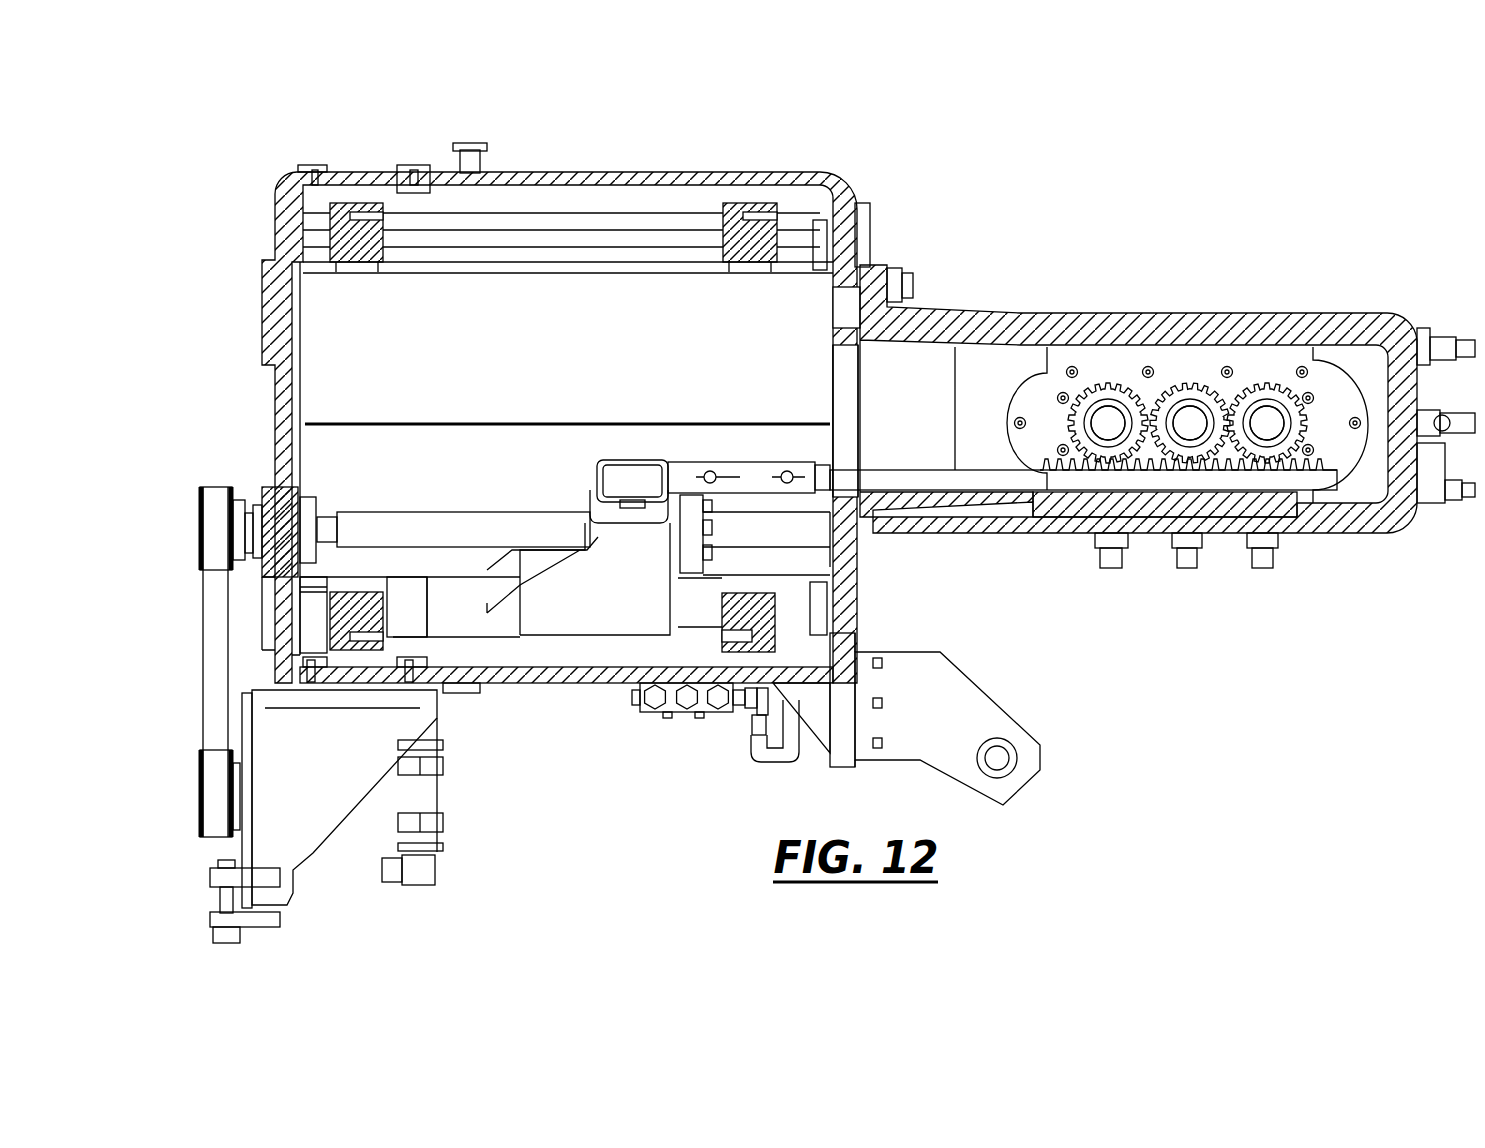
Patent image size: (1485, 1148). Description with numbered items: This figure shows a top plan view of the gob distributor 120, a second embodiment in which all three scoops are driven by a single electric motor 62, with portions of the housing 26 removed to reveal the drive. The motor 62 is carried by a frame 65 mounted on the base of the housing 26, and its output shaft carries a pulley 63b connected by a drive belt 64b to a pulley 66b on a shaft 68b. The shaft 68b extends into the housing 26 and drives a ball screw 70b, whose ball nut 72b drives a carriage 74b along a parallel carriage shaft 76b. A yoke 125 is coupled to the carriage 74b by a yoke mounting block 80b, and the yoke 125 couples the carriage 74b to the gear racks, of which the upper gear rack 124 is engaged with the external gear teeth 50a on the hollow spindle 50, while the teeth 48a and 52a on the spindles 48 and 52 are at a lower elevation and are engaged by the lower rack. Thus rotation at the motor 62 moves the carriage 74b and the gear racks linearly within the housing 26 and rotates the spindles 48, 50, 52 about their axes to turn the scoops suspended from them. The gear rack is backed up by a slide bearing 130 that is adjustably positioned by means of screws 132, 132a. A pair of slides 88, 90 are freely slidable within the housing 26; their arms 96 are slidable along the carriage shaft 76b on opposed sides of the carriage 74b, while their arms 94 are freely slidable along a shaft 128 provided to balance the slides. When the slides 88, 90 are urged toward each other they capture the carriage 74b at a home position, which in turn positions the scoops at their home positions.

The housing 26 is at (585, 168).
The shaft 128 is at (630, 250).
The gob distributor 120 is at (952, 181).
The arms 94 is at (345, 205).
The slide 90 is at (367, 261).
The slide 88 is at (743, 261).
The arms 96 is at (352, 620).
The ball screw 70b is at (437, 520).
The shaft 68b is at (318, 512).
The carriage 74b is at (588, 615).
The ball nut 72b is at (590, 535).
The yoke mounting block 80b is at (632, 468).
The yoke 125 is at (738, 468).
The carriage shaft 76b is at (698, 605).
The upper gear rack 124 is at (1315, 478).
The slide bearing 130 is at (1145, 505).
The screw 132 is at (1183, 548).
The screw 132a is at (1262, 548).
The hollow spindle 52 is at (1090, 388).
The external gear teeth 52a is at (1082, 382).
The hollow spindle 50 is at (1172, 385).
The external gear teeth 50a is at (1190, 385).
The hollow spindle 48 is at (1257, 385).
The external gear teeth 48a is at (1270, 385).
The drive belt 64b is at (210, 625).
The pulley 66b is at (200, 525).
The pulley 63b is at (200, 790).
The frame 65 is at (303, 828).
The electric motor 62 is at (432, 797).